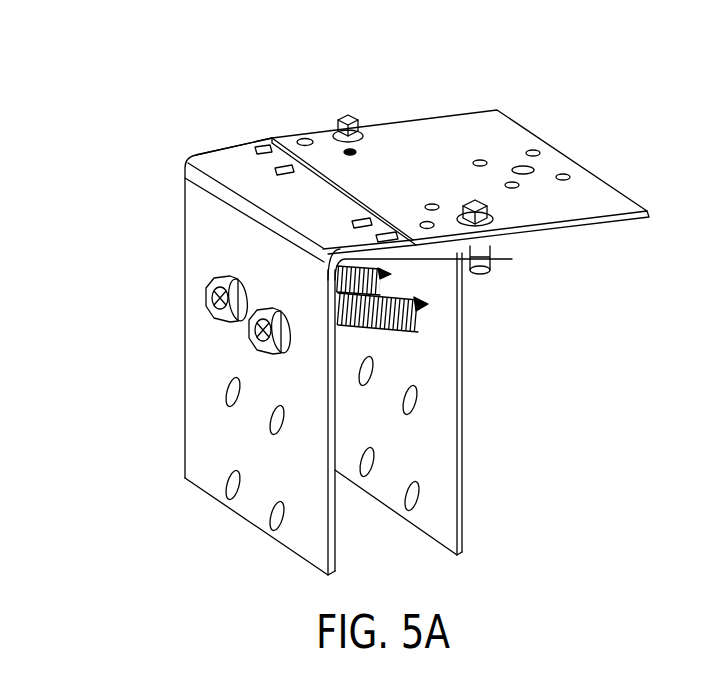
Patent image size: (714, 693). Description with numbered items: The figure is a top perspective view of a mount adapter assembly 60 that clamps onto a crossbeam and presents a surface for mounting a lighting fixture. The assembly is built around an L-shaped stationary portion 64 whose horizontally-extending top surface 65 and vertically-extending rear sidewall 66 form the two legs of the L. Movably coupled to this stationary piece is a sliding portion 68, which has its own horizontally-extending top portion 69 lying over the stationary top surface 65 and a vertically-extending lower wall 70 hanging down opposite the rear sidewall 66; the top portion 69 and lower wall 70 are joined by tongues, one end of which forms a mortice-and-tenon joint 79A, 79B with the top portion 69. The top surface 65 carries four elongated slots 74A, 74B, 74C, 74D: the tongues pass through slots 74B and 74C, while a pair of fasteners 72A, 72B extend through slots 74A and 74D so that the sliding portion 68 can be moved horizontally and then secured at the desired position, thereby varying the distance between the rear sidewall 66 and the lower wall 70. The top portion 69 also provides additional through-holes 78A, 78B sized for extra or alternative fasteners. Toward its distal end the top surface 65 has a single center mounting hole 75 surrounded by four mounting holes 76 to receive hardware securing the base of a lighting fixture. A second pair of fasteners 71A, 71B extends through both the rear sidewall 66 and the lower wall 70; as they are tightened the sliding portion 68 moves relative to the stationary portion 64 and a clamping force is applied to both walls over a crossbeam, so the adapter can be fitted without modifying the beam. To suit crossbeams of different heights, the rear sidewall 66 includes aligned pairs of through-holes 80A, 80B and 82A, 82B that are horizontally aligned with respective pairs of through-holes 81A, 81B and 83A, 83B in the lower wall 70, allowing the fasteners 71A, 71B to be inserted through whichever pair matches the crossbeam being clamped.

The mount adapter assembly 60 is at (113, 126).
The L-shaped stationary portion 64 is at (205, 184).
The horizontally-extending top surface 65 is at (603, 200).
The vertically-extending rear sidewall 66 is at (200, 358).
The sliding portion 68 is at (394, 128).
The horizontally-extending top portion 69 is at (403, 148).
The vertically-extending lower wall 70 is at (463, 391).
The fastener 71A is at (429, 304).
The fastener 71B is at (391, 273).
The fastener 72A is at (495, 222).
The fastener 72B is at (356, 112).
The elongated slot 74A is at (208, 297).
The elongated slot 74B is at (383, 237).
The elongated slot 74C is at (283, 170).
The elongated slot 74D is at (262, 147).
The center mounting hole 75 is at (523, 167).
The mounting hole 76 is at (509, 182).
The through-hole 78A is at (420, 223).
The through-hole 78B is at (303, 138).
The mortice-and-tenon joint 79A is at (432, 204).
The mortice-and-tenon joint 79B is at (338, 118).
The through-hole 80A is at (226, 392).
The through-hole 80B is at (270, 421).
The through-hole 81A is at (358, 371).
The through-hole 81B is at (418, 398).
The through-hole 82A is at (227, 484).
The through-hole 82B is at (270, 519).
The through-hole 83A is at (374, 460).
The through-hole 83B is at (420, 494).